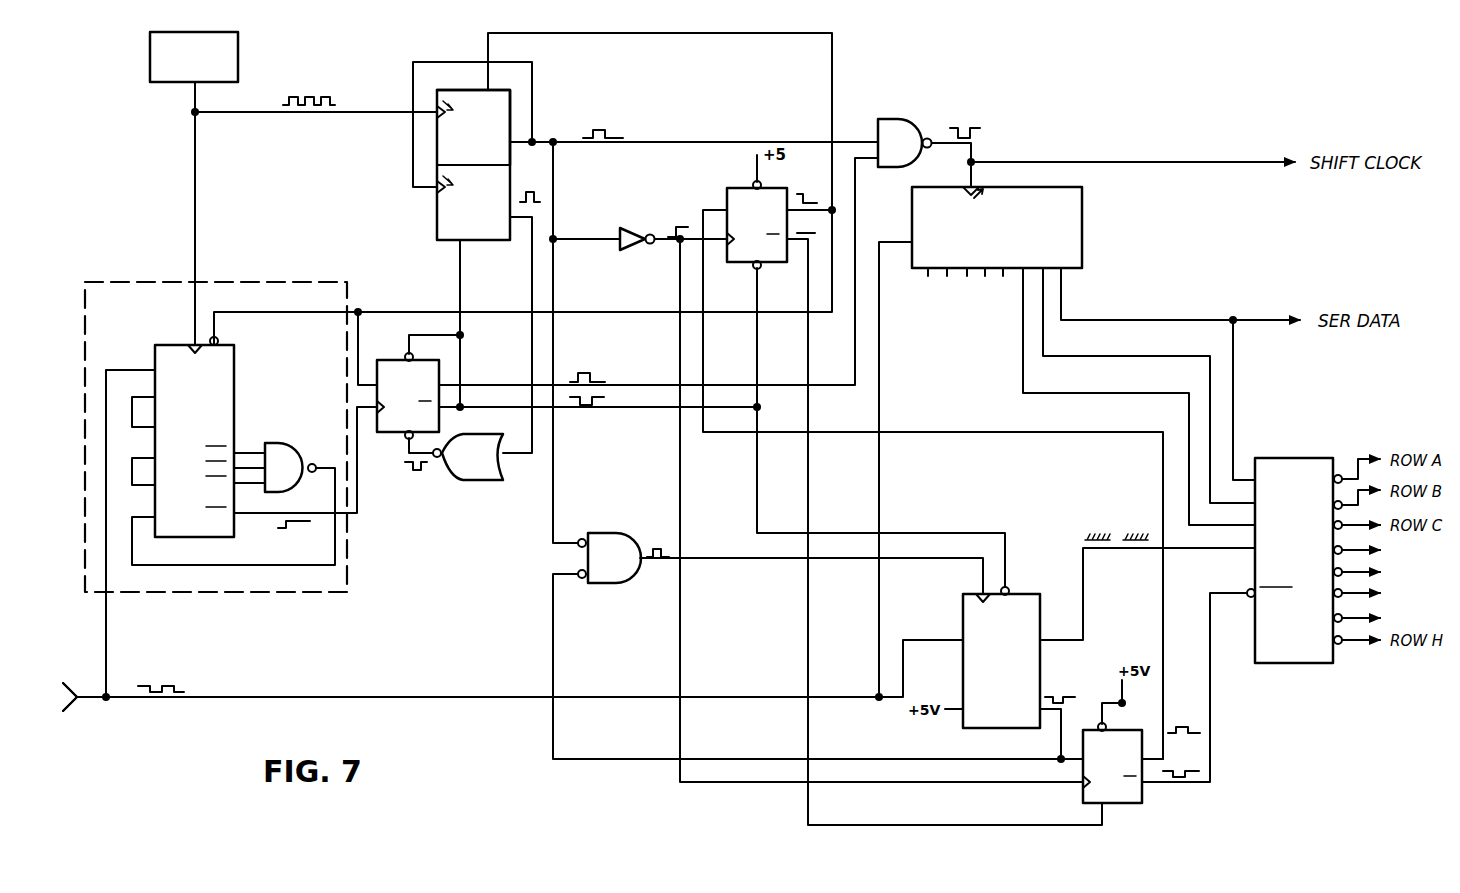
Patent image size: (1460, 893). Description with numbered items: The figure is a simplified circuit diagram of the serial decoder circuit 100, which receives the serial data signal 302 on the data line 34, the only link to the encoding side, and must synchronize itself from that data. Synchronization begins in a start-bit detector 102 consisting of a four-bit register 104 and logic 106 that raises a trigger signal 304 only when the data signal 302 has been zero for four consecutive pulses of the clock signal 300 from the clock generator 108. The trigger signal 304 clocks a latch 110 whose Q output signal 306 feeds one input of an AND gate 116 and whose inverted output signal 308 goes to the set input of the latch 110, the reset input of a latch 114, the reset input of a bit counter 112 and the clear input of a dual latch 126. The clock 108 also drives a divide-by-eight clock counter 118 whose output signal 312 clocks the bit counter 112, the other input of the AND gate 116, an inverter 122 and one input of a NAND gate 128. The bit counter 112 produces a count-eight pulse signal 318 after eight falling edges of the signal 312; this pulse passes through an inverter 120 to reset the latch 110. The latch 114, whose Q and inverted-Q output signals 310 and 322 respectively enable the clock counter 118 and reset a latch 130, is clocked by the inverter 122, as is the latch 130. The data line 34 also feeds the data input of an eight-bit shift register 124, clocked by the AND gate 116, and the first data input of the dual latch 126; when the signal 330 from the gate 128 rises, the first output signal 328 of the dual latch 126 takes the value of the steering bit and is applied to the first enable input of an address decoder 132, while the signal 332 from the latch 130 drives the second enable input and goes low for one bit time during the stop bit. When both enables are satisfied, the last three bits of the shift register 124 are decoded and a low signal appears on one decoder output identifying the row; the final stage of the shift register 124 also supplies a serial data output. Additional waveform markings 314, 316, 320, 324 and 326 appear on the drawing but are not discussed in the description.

The data line 34 is at (82, 697).
The serial decoder circuit 100 is at (1042, 146).
The start-bit detector 102 is at (258, 280).
The 4-bit register 104 is at (237, 376).
The logic 106 is at (310, 427).
The clock generator 108 is at (240, 46).
The latch circuit 110 is at (395, 434).
The bit counter 112 is at (437, 218).
The latch 114 is at (727, 190).
The AND gate 116 is at (886, 118).
The divide-by-eight clock counter 118 is at (513, 108).
The inverter 120 is at (495, 481).
The inverter 122 is at (637, 252).
The shift register 124 is at (1084, 208).
The dual latch 126 is at (1024, 593).
The NAND gate 128 is at (617, 533).
The latch 130 is at (1143, 797).
The address decoder 132 is at (1303, 457).
The clock signal 300 is at (322, 98).
The serial data signal 302 is at (170, 685).
The trigger signal 304 is at (286, 528).
The Q output signal of latch 110 306 is at (612, 358).
The inverted Q output signal of latch 110 308 is at (590, 405).
The Q output signal of latch 114 310 is at (812, 184).
The clock counter output signal 312 is at (613, 131).
The signal waveform 314 is at (680, 238).
The shift clock waveform 316 is at (967, 126).
The count-eight pulse signal 318 is at (536, 200).
The signal waveform 320 is at (413, 472).
The inverted Q output signal of latch 114 322 is at (814, 233).
The signal waveform 324 is at (1057, 697).
The signal waveform 326 is at (1182, 727).
The Q1 output signal of dual latch 328 is at (1115, 508).
The signal from gate 128 330 is at (668, 548).
The Q output signal of latch 130 332 is at (1193, 770).